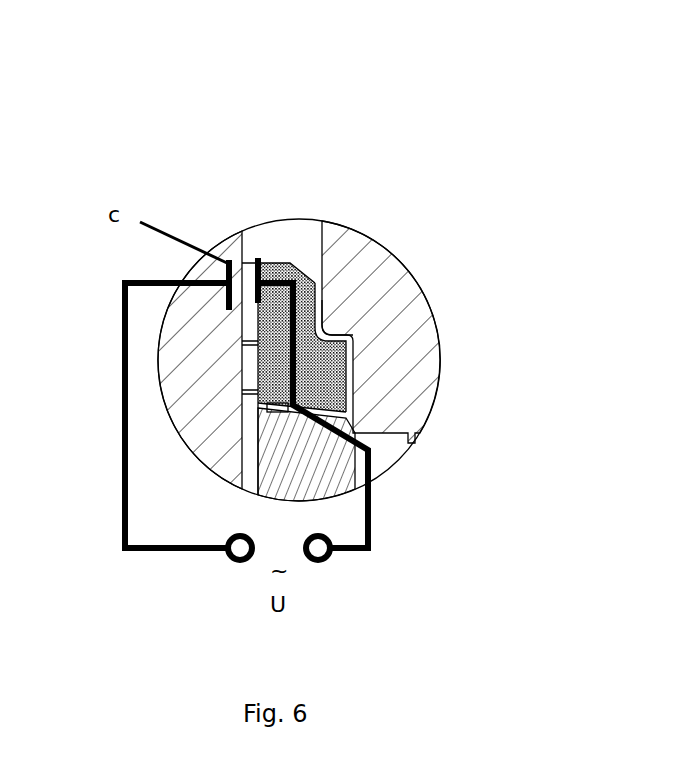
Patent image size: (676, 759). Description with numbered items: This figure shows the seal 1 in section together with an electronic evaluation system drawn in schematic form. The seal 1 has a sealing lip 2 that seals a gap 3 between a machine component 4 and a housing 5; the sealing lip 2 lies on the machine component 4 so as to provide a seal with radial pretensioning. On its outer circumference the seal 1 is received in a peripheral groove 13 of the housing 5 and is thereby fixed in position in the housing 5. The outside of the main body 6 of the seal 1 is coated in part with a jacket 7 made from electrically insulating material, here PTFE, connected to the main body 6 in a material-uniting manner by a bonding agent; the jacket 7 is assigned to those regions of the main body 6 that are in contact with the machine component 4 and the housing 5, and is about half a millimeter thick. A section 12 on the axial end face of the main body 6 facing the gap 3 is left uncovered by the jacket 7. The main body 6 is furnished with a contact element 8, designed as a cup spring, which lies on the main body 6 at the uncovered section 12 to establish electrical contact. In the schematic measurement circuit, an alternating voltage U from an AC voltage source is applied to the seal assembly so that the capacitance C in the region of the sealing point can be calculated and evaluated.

The seal 1 is at (395, 320).
The sealing lip 2 is at (247, 265).
The gap 3 is at (275, 235).
The machine component 4 is at (228, 282).
The housing 5 is at (385, 265).
The main body 6 is at (345, 404).
The jacket 7 is at (300, 258).
The contact element 8 is at (283, 412).
The section 12 is at (373, 465).
The peripheral groove 13 is at (435, 333).